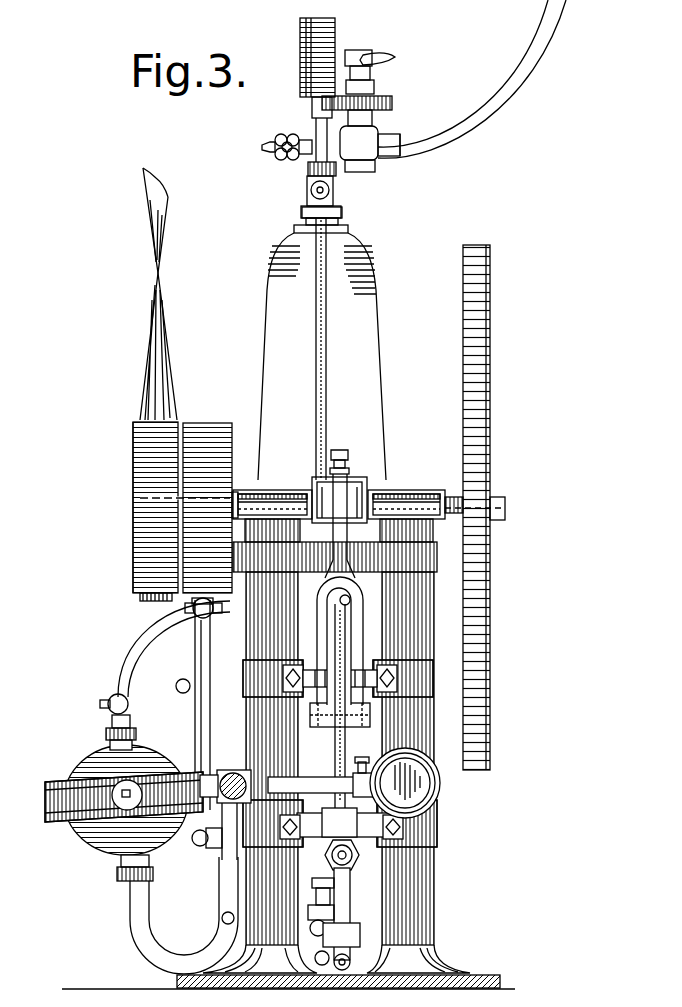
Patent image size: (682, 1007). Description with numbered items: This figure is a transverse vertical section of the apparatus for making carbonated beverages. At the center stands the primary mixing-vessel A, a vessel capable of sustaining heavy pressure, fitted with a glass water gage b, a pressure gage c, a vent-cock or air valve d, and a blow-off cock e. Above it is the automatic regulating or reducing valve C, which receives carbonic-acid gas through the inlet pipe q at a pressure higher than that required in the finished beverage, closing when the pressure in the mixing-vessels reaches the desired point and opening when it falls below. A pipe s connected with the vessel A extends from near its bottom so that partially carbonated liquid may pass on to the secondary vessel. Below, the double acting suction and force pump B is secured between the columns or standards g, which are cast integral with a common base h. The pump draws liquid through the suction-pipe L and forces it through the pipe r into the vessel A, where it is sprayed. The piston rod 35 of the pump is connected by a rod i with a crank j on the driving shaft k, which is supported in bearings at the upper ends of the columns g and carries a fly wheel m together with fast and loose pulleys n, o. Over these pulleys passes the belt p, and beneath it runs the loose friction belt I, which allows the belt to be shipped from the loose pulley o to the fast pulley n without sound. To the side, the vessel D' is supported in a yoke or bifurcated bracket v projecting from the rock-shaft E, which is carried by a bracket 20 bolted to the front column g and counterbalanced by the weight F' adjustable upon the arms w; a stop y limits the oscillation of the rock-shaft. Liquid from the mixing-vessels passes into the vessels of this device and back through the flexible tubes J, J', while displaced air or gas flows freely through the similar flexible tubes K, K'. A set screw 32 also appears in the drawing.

The pressure gage c is at (310, 62).
The automatic regulating or reducing valve C is at (378, 104).
The vent-cock or air valve d is at (302, 138).
The inlet pipe q is at (498, 100).
The pipe s is at (333, 190).
The primary mixing-vessel A is at (286, 250).
The driving shaft k is at (368, 500).
The crank j is at (350, 478).
The columns or standards g is at (425, 556).
The rod i is at (362, 622).
The pipe r is at (349, 598).
The piston rod 35 is at (346, 652).
The arms w is at (312, 785).
The set screw 32 is at (365, 764).
The rock-shaft E is at (232, 770).
The weight F' is at (435, 783).
The suction-pipe L is at (350, 899).
The blow-off cock e is at (335, 925).
The double acting suction and force pump B is at (360, 932).
The base h is at (455, 977).
The belt p is at (172, 375).
The loose friction belt I is at (150, 488).
The fast pulley n is at (201, 437).
The loose pulley o is at (133, 523).
The flexible tube K' is at (174, 649).
The flexible tube K is at (214, 704).
The glass water gage b is at (200, 644).
The vessel D' is at (124, 787).
The yoke or bifurcated bracket v is at (142, 797).
The stop y is at (222, 775).
The flexible tube J is at (209, 846).
The bracket 20 is at (222, 822).
The flexible tube J' is at (158, 915).
The fly wheel m is at (490, 312).